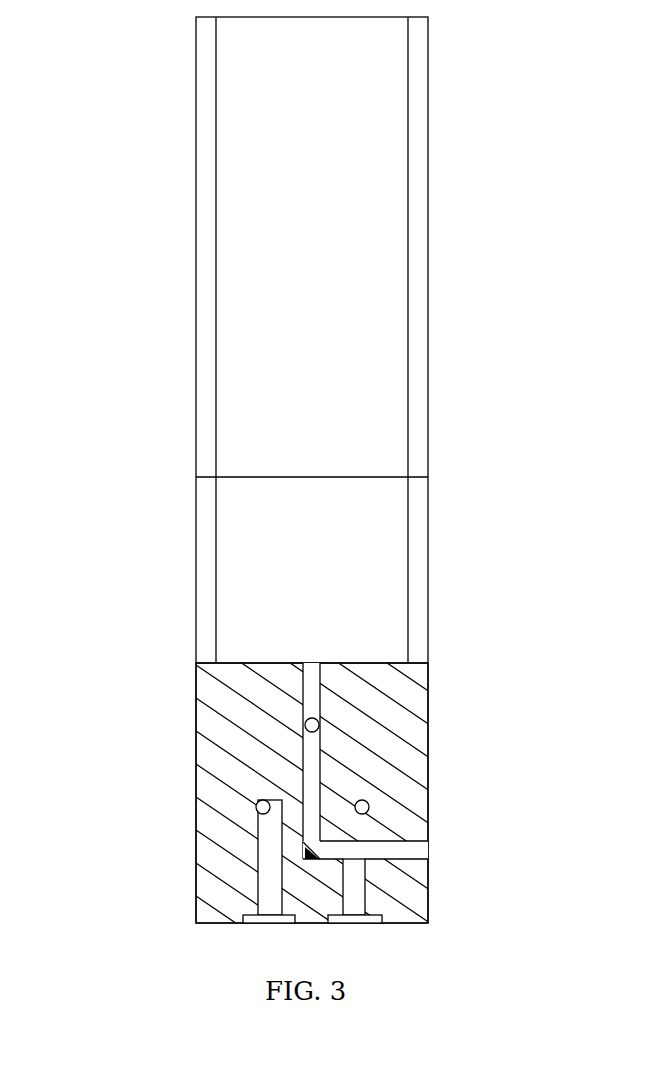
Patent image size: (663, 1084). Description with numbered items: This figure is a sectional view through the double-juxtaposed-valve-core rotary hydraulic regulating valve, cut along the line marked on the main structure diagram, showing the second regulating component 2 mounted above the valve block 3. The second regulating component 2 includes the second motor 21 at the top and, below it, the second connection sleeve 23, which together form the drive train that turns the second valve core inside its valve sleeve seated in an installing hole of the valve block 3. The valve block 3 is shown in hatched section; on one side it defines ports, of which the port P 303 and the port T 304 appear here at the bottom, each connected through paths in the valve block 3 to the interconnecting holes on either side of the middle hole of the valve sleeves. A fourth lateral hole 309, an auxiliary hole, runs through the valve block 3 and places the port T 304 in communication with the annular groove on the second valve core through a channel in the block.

The second regulating component 2 is at (343, 233).
The second motor 21 is at (362, 358).
The second connection sleeve 23 is at (350, 613).
The valve block 3 is at (402, 742).
The fourth lateral hole 309 is at (428, 840).
The port P 303 is at (363, 913).
The port T 304 is at (260, 920).